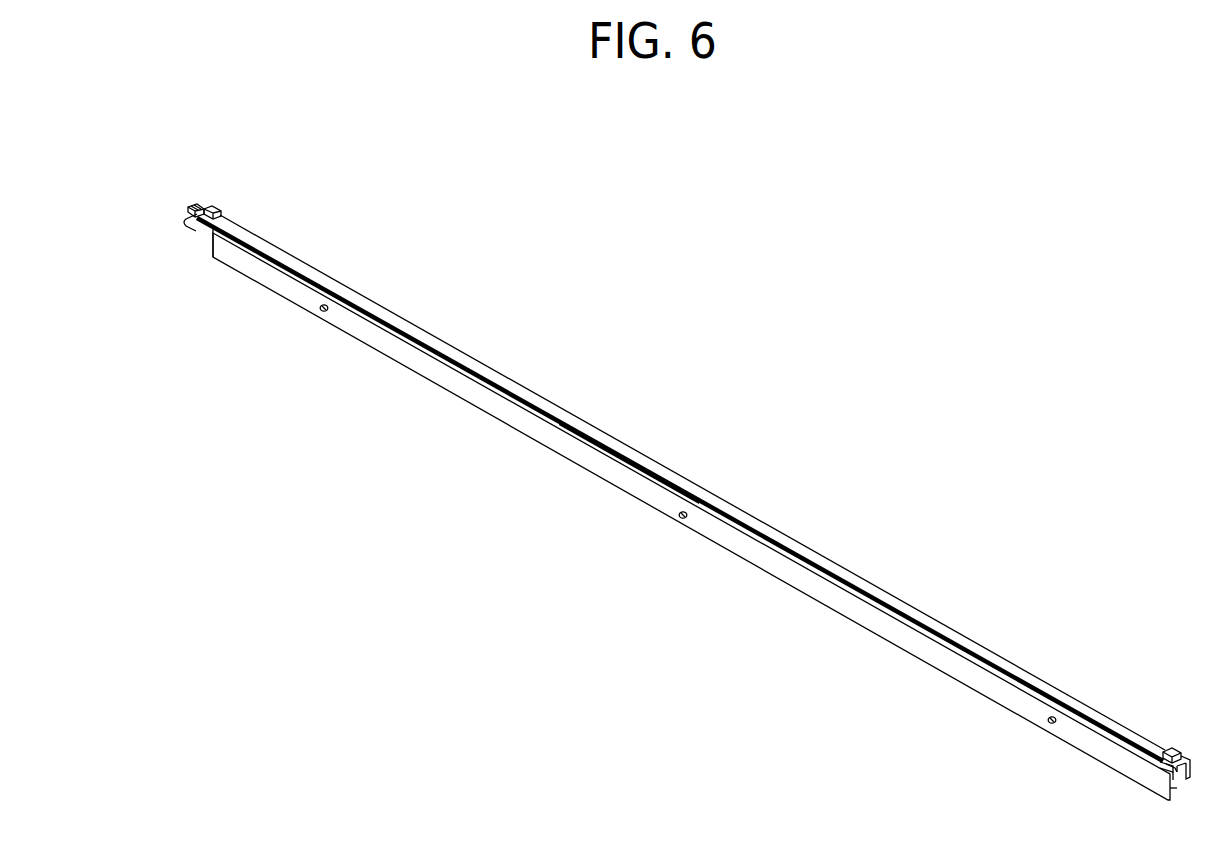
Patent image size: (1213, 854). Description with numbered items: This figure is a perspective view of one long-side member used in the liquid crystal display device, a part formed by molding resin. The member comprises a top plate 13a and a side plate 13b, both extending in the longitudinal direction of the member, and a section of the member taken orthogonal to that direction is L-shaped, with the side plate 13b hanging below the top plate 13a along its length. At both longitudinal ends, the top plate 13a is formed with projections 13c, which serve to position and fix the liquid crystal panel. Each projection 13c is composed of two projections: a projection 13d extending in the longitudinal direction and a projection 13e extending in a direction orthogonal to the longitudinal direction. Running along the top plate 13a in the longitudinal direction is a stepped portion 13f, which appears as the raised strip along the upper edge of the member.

The top plate 13a is at (288, 258).
The side plate 13b is at (432, 373).
The projection 13c is at (274, 168).
The projection 13d is at (209, 206).
The projection 13e is at (191, 207).
The stepped portion 13f is at (621, 457).